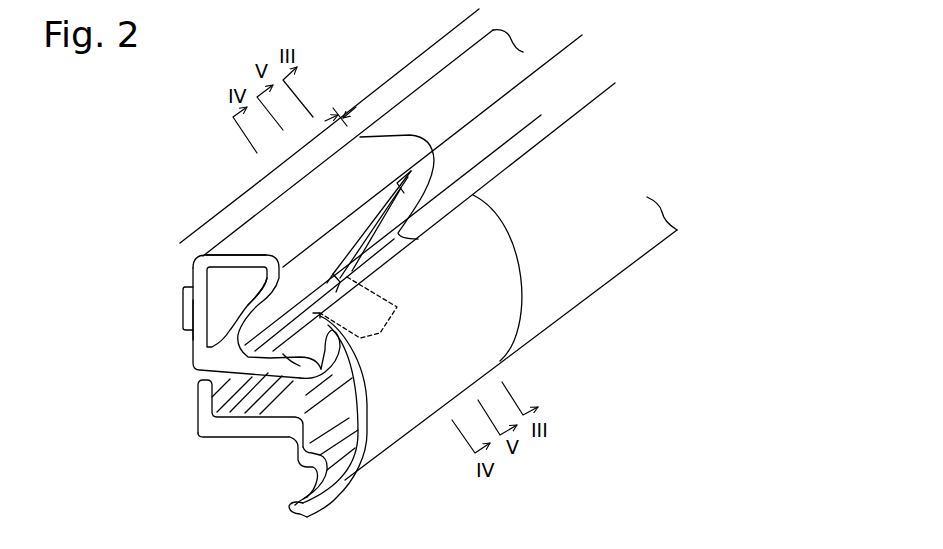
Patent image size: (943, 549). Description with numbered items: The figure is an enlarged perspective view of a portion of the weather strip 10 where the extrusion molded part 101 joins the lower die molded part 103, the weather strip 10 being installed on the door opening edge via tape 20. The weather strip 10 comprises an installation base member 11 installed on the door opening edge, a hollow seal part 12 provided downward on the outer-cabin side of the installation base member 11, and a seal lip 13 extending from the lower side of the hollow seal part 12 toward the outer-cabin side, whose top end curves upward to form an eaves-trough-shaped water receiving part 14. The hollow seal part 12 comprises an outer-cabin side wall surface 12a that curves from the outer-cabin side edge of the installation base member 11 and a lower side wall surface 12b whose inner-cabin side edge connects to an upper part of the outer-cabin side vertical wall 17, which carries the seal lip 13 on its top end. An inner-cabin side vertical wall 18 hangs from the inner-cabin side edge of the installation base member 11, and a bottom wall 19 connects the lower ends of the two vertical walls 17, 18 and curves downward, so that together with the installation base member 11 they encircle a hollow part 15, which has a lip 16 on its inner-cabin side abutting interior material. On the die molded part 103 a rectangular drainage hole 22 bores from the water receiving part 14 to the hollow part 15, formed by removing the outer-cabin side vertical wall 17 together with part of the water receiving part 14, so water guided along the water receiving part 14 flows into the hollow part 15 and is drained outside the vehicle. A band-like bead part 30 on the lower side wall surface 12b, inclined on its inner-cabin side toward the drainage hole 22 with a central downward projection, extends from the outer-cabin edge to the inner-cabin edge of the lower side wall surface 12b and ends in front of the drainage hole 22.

The weather strip 10 is at (641, 290).
The extrusion molded part 101 is at (410, 63).
The die molded part 103 is at (233, 230).
The drainage hole 22 is at (220, 210).
The bead part 30 is at (395, 185).
The hollow seal part 12 is at (240, 247).
The outer-cabin side wall surface 12a is at (213, 230).
The lower side wall surface 12b is at (190, 338).
The tape 20 is at (180, 303).
The installation base member 11 is at (238, 316).
The seal lip 13 is at (205, 403).
The water receiving part 14 is at (262, 360).
The outer-cabin side vertical wall 17 is at (238, 437).
The inner-cabin side vertical wall 18 is at (283, 354).
The hollow part 15 is at (268, 428).
The lip 16 is at (303, 518).
The bottom wall 19 is at (365, 453).